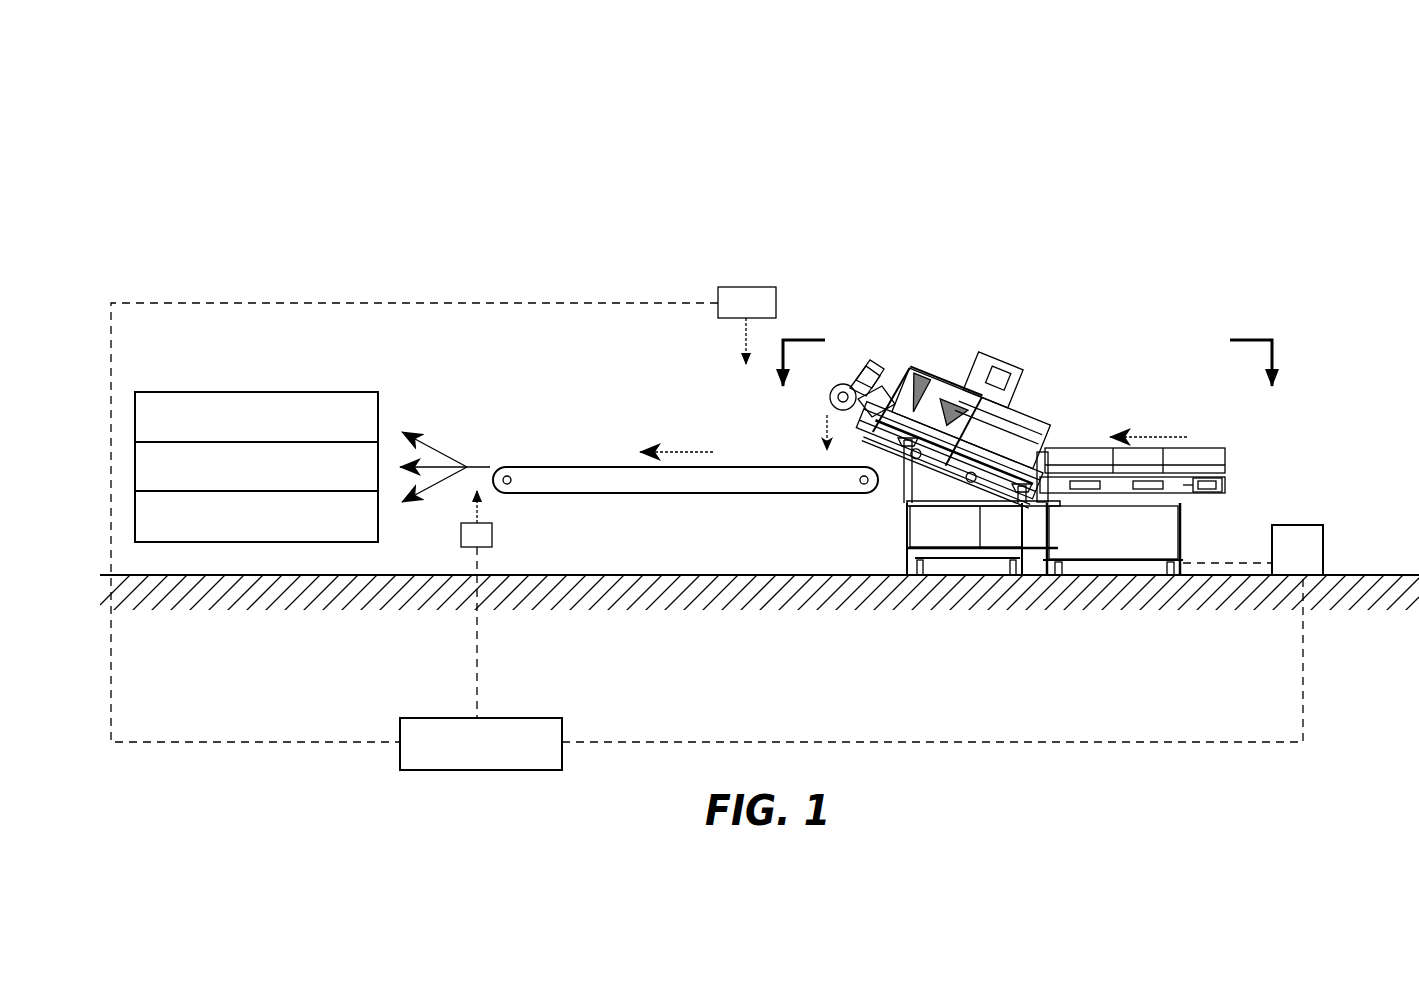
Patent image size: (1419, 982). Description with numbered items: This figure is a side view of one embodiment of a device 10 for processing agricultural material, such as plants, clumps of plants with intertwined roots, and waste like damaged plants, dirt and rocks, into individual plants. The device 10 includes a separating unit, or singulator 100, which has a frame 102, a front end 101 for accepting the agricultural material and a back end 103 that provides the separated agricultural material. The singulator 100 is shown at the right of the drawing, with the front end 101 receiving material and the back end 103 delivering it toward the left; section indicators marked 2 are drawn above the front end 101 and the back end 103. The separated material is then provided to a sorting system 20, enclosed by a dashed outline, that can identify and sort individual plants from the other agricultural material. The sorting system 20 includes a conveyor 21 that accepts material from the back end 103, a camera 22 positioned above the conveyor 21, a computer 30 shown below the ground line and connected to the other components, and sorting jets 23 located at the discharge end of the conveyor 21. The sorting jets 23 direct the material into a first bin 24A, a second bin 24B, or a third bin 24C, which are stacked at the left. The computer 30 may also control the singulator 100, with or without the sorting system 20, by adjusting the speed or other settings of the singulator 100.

The device 10 is at (585, 110).
The sorting system 20 is at (472, 254).
The conveyor 21 is at (717, 537).
The camera 22 is at (777, 311).
The sorting jets 23 is at (493, 537).
The first bin 24A is at (275, 430).
The second bin 24B is at (275, 479).
The third bin 24C is at (275, 529).
The computer 30 is at (490, 755).
The section line indicator 2 is at (1029, 395).
The singulator 100 is at (955, 116).
The front end 101 is at (1215, 381).
The frame 102 is at (905, 523).
The back end 103 is at (918, 286).